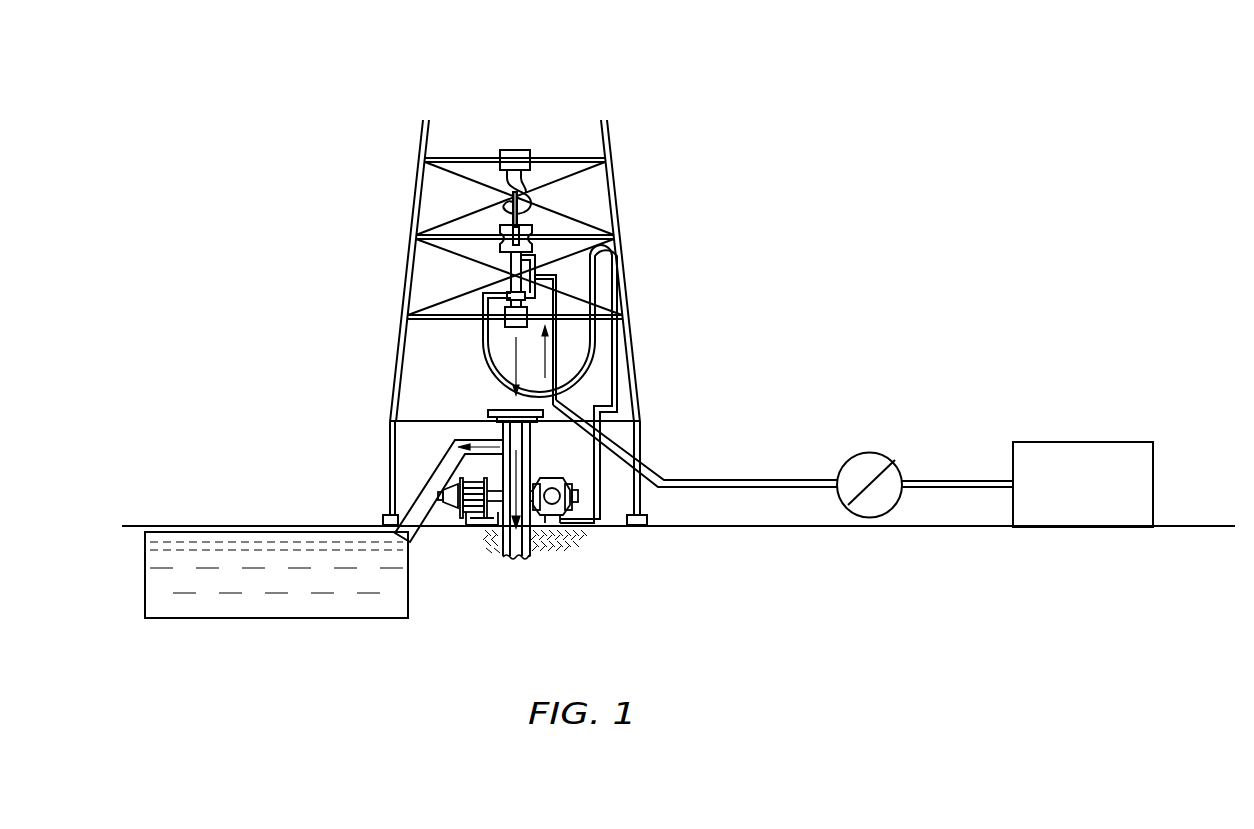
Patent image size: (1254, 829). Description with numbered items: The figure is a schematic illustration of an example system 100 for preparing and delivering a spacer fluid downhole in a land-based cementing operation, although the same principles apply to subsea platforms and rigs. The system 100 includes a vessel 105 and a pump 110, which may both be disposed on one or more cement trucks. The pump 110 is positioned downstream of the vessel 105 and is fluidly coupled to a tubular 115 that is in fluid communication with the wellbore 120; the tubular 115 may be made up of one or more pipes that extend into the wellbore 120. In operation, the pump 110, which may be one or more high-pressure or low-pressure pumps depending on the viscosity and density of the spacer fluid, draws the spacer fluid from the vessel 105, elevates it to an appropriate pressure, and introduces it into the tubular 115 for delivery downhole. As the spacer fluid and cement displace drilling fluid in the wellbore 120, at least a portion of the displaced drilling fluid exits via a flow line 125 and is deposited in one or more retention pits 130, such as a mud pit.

The system 100 is at (860, 158).
The vessel 105 is at (1055, 441).
The pump 110 is at (877, 451).
The tubular 115 is at (647, 465).
The wellbore 120 is at (539, 562).
The flow line 125 is at (438, 510).
The retention pit 130 is at (195, 619).